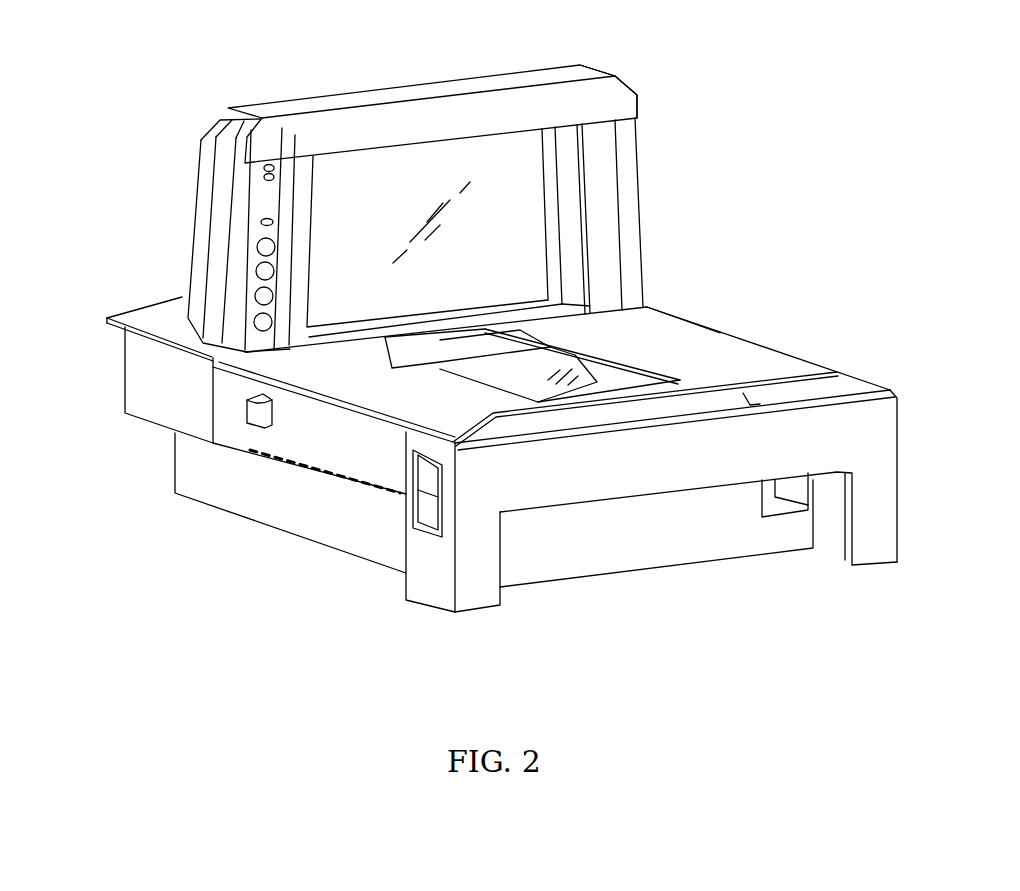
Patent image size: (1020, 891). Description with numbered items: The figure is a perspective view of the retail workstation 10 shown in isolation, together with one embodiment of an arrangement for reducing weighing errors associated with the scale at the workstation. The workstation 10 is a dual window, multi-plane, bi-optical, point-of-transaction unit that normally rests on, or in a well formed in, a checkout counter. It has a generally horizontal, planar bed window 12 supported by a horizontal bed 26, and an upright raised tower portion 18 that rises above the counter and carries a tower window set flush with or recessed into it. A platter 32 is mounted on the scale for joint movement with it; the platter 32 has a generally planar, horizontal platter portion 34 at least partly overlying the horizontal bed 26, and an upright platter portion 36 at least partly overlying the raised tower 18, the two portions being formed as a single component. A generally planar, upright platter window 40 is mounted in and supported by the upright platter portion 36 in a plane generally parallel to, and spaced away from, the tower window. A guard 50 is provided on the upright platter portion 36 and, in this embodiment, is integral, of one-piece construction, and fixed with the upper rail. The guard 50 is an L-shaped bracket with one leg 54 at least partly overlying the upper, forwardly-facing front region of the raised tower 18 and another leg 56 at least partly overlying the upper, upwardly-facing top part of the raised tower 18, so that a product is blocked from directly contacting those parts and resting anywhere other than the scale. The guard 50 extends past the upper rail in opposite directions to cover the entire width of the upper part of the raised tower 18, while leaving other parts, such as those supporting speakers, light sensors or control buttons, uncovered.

The retail workstation 10 is at (138, 263).
The bed window 12 is at (595, 378).
The raised tower portion 18 is at (192, 213).
The horizontal bed 26 is at (337, 448).
The platter 32 is at (692, 326).
The horizontal platter portion 34 is at (785, 352).
The upright platter portion 36 is at (566, 237).
The upright platter window 40 is at (523, 177).
The guard 50 is at (630, 82).
The leg 54 is at (638, 103).
The leg 56 is at (407, 84).